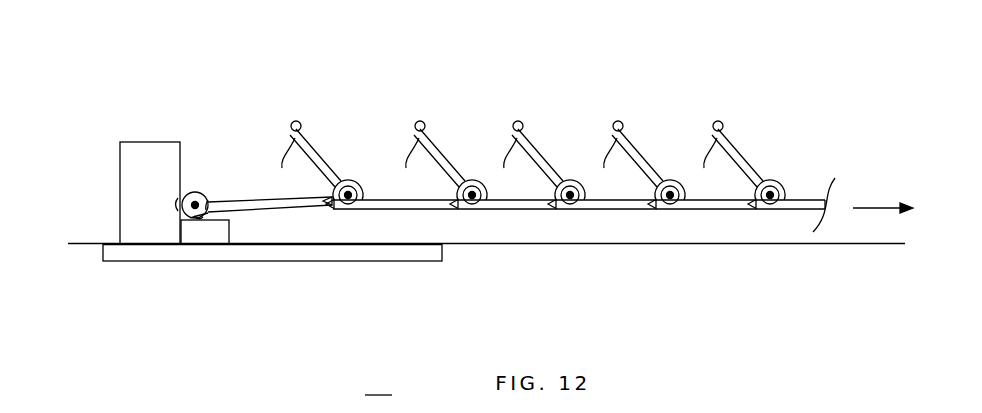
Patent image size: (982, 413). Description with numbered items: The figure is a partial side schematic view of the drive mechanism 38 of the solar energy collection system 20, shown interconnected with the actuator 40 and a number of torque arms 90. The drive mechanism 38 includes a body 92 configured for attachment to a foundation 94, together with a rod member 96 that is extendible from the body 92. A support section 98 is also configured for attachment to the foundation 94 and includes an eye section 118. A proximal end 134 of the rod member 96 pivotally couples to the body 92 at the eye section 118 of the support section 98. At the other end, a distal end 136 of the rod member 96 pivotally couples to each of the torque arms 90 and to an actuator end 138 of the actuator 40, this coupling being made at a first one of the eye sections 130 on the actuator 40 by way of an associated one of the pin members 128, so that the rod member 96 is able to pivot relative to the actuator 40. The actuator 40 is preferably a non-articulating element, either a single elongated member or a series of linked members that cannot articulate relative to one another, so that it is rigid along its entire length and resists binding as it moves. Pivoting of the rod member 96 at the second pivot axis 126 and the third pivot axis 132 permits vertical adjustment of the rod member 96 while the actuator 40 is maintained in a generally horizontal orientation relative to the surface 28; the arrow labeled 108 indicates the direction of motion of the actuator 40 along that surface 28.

The solar energy collection system 20 is at (378, 383).
The surface 28 is at (87, 244).
The drive mechanism 38 is at (130, 250).
The actuator 40 is at (817, 200).
The torque arms 90 is at (298, 133).
The body 92 is at (128, 142).
The foundation 94 is at (152, 255).
The rod member 96 is at (267, 193).
The support section 98 is at (212, 220).
The direction of travel 108 is at (880, 208).
The eye section 118 is at (212, 203).
The second pivot axis 126 is at (222, 232).
The pin members 128 is at (348, 199).
The eye sections 130 is at (352, 197).
The third pivot axis 132 is at (366, 187).
The proximal end 134 is at (222, 200).
The distal end 136 is at (293, 205).
The actuator end 138 is at (383, 200).